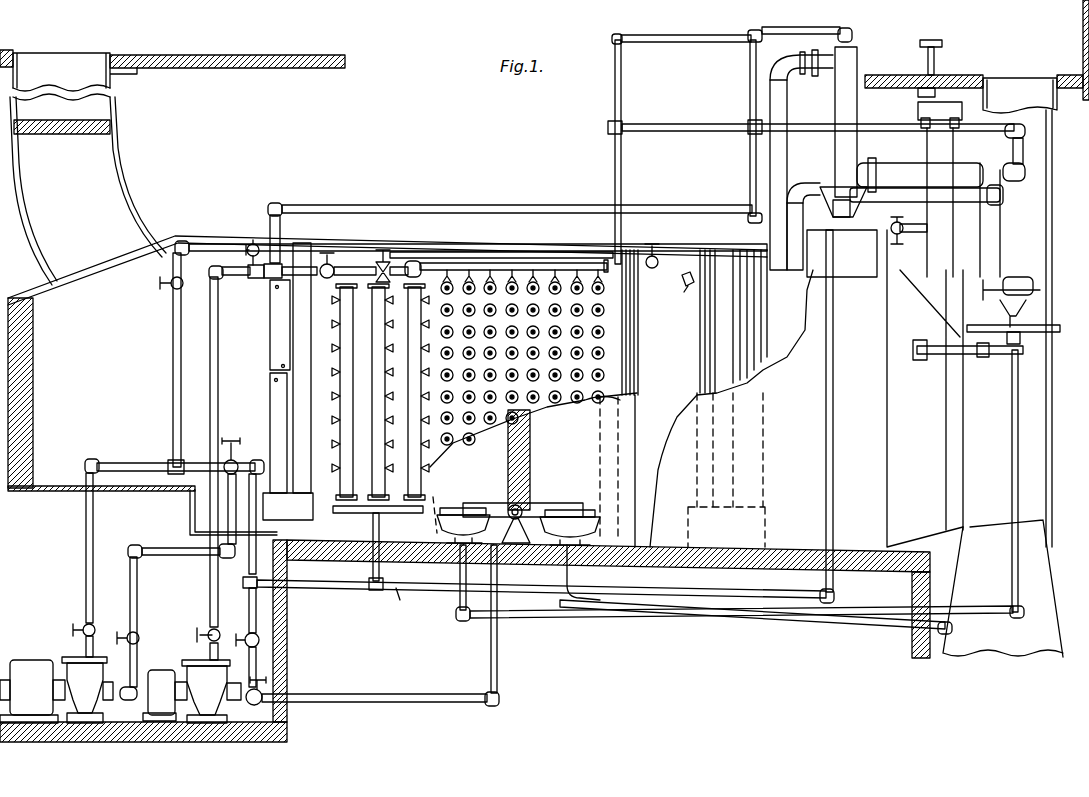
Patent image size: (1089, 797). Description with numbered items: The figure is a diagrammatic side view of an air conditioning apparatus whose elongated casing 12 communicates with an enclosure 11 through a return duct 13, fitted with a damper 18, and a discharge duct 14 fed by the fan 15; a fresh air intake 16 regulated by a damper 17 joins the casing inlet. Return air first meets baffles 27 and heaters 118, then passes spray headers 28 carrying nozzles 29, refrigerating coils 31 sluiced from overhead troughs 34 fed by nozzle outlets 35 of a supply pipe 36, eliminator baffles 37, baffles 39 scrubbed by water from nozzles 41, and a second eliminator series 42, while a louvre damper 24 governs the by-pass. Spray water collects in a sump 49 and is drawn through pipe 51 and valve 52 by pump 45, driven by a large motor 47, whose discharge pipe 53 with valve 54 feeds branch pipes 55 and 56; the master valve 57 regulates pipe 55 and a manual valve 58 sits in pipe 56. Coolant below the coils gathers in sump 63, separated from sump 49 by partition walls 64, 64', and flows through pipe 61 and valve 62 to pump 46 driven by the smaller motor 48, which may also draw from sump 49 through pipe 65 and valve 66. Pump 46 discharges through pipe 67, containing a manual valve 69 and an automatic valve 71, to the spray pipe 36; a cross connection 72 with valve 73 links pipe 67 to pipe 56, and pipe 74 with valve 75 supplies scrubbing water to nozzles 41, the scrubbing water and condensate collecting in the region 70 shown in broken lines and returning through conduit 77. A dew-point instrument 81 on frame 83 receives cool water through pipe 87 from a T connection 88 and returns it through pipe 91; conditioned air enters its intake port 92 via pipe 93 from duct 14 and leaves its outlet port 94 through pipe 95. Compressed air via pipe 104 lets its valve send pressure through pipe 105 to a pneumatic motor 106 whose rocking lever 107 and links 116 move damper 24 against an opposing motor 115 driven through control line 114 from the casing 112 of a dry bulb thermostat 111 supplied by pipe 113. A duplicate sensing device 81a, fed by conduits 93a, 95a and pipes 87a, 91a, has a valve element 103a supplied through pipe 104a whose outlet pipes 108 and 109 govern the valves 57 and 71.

The enclosure 11 is at (247, 45).
The casing 12 is at (338, 216).
The return air duct 13 is at (122, 183).
The discharge duct 14 is at (1040, 232).
The fan 15 is at (1040, 406).
The fresh air intake 16 is at (40, 490).
The damper 17 is at (30, 392).
The damper 18 is at (100, 128).
The louvre damper 24 is at (528, 452).
The baffles 27 is at (293, 323).
The spray headers 28 is at (342, 306).
The nozzles 29 is at (340, 415).
The refrigerating coils 31 is at (597, 380).
The spray troughs 34 is at (452, 268).
The nozzle outlets 35 is at (597, 262).
The supply pipe 36 is at (525, 262).
The eliminator baffles 37 is at (638, 359).
The baffles 39 is at (705, 364).
The discharge nozzles 41 is at (686, 292).
The eliminator baffles 42 is at (752, 366).
The pump 45 is at (90, 725).
The pump 46 is at (207, 725).
The motor 47 is at (25, 668).
The motor 48 is at (156, 670).
The sump 49 is at (200, 505).
The pipe 51 is at (130, 578).
The control valve 52 is at (140, 640).
The discharge pipe 53 is at (86, 568).
The control valve 54 is at (82, 628).
The branch pipe 55 is at (195, 463).
The branch pipe 56 is at (173, 433).
The master control valve 57 is at (229, 455).
The valve 58 is at (170, 286).
The pipe 61 is at (432, 703).
The valve 62 is at (265, 698).
The sump 63 is at (462, 607).
The partition wall 64 is at (525, 465).
The partition wall 64' is at (706, 408).
The pipe 65 is at (249, 612).
The valve 66 is at (262, 643).
The pipe 67 is at (210, 578).
The valve 69 is at (333, 268).
The tank 70 is at (696, 540).
The automatic regulating valve 71 is at (383, 260).
The cross connection 72 is at (257, 279).
The valve 73 is at (252, 244).
The pipe 74 is at (566, 255).
The valve 75 is at (654, 270).
The conduit 77 is at (645, 605).
The dew-point sensing instrument 81 is at (858, 108).
The dew-point sensing device 81a is at (1020, 258).
The frame 83 is at (820, 210).
The pipe 87 is at (395, 210).
The pipe 87a is at (1022, 136).
The T connection 88 is at (275, 279).
The return pipe 91 is at (620, 87).
The pipe 91a is at (1022, 170).
The air intake port 92 is at (862, 190).
The pipe 93 is at (895, 186).
The conduit 93a is at (1035, 314).
The outlet port 94 is at (830, 70).
The pipe 95 is at (778, 170).
The conduit 95a is at (797, 242).
The valve element 103a is at (1005, 362).
The pipe 104 is at (900, 252).
The pipe 104a is at (927, 397).
The pipe 105 is at (833, 306).
The pneumatic motor element 106 is at (600, 518).
The rocking lever 107 is at (548, 508).
The pipe 108 is at (376, 580).
The pipe 109 is at (395, 588).
The thermostat 111 is at (938, 58).
The casing 112 is at (945, 110).
The pipe 113 is at (927, 234).
The control line 114 is at (940, 265).
The pneumatic motor 115 is at (462, 512).
The links 116 is at (532, 506).
The heaters 118 is at (276, 388).